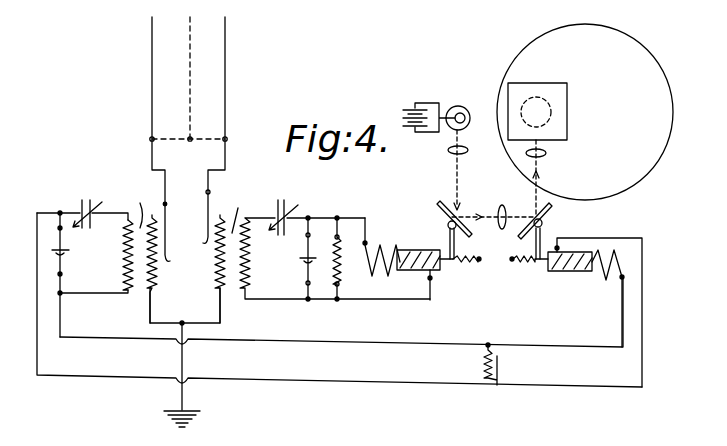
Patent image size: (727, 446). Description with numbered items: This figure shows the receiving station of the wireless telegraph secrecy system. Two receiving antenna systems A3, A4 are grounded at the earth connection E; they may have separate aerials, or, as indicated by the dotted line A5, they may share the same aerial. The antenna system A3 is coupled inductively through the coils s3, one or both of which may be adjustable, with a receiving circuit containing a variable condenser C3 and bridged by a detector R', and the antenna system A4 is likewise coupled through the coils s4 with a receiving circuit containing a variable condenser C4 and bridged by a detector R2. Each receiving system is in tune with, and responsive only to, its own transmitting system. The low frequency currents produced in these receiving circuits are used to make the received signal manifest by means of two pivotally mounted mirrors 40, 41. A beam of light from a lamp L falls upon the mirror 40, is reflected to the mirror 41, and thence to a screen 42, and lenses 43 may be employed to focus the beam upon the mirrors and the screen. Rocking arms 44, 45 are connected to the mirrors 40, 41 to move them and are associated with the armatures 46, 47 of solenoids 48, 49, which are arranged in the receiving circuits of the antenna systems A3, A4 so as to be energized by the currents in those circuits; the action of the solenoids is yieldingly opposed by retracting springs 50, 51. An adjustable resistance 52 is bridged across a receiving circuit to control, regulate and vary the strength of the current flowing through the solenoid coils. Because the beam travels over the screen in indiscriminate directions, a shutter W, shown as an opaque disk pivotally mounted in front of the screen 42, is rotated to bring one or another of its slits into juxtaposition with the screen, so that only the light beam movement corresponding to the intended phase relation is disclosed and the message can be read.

The receiving antenna system A3 is at (163, 139).
The receiving antenna system A4 is at (225, 130).
The common aerial A5 is at (188, 79).
The variable condenser C3 is at (82, 197).
The variable condenser C4 is at (317, 209).
The coupling coils s3 is at (144, 249).
The coupling coils s4 is at (235, 252).
The detector R' is at (92, 274).
The detector R2 is at (304, 258).
The lamp L is at (436, 100).
The shutter W is at (665, 80).
The earth E is at (191, 378).
The mirror 40 is at (494, 175).
The mirror 41 is at (534, 208).
The screen 42 is at (567, 109).
The lens 43 is at (452, 156).
The rocking arm 44 is at (450, 240).
The rocking arm 45 is at (539, 243).
The armature 46 is at (437, 271).
The armature 47 is at (560, 272).
The solenoid 48 is at (383, 225).
The solenoid 49 is at (609, 278).
The retracting spring 50 is at (470, 264).
The retracting spring 51 is at (530, 266).
The adjustable resistance 52 is at (499, 371).